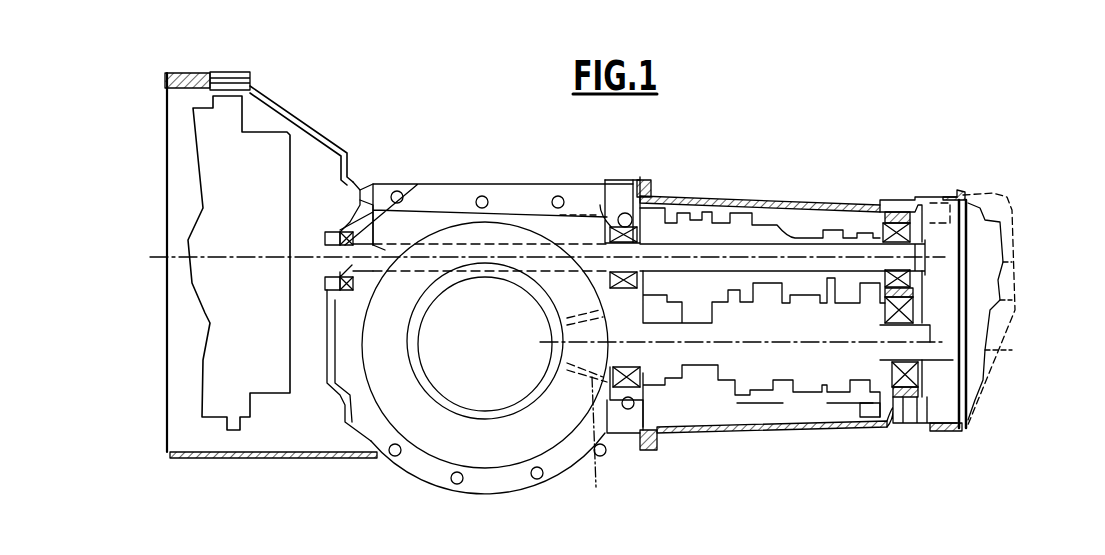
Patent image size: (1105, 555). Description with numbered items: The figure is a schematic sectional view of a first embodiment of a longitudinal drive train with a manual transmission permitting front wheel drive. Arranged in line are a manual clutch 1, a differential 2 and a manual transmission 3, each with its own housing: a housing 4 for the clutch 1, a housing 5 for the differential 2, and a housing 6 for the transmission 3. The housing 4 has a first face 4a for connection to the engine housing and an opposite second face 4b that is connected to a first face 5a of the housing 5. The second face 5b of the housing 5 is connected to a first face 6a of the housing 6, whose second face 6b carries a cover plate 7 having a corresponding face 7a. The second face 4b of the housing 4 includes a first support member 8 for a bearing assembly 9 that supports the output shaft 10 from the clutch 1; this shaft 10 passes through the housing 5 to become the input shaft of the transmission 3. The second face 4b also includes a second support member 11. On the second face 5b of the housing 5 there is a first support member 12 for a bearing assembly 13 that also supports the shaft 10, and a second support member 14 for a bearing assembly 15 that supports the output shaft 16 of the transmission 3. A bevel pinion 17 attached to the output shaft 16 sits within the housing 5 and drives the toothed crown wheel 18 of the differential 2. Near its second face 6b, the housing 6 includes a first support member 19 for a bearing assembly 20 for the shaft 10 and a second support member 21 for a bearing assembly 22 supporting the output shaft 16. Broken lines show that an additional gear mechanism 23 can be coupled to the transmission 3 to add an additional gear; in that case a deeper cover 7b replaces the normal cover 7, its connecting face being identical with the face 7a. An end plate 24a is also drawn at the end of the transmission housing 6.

The manual clutch 1 is at (292, 162).
The differential 2 is at (502, 334).
The manual transmission 3 is at (805, 232).
The housing 4 is at (293, 108).
The first face 4a is at (167, 452).
The second face 4b is at (375, 192).
The housing 5 is at (455, 197).
The first face 5a is at (378, 447).
The second face 5b is at (651, 187).
The housing 6 is at (728, 200).
The first face 6a is at (638, 432).
The second face 6b is at (968, 195).
The cover plate 7 is at (967, 240).
The face 7a is at (960, 430).
The deeper cover 7b is at (1017, 270).
The first support member 8 is at (353, 180).
The bearing assembly 9 is at (407, 197).
The output shaft 10 is at (593, 250).
The second support member 11 is at (347, 383).
The first support member 12 is at (628, 215).
The bearing assembly 13 is at (607, 215).
The second support member 14 is at (643, 392).
The bearing assembly 15 is at (657, 400).
The output shaft 16 is at (753, 342).
The bevel pinion 17 is at (594, 407).
The toothed crown wheel 18 is at (497, 232).
The first support member 19 is at (887, 212).
The bearing assembly 20 is at (903, 210).
The second support member 21 is at (903, 400).
The bearing assembly 22 is at (918, 372).
The additional gear mechanism 23 is at (982, 312).
The end plate 24a is at (948, 190).